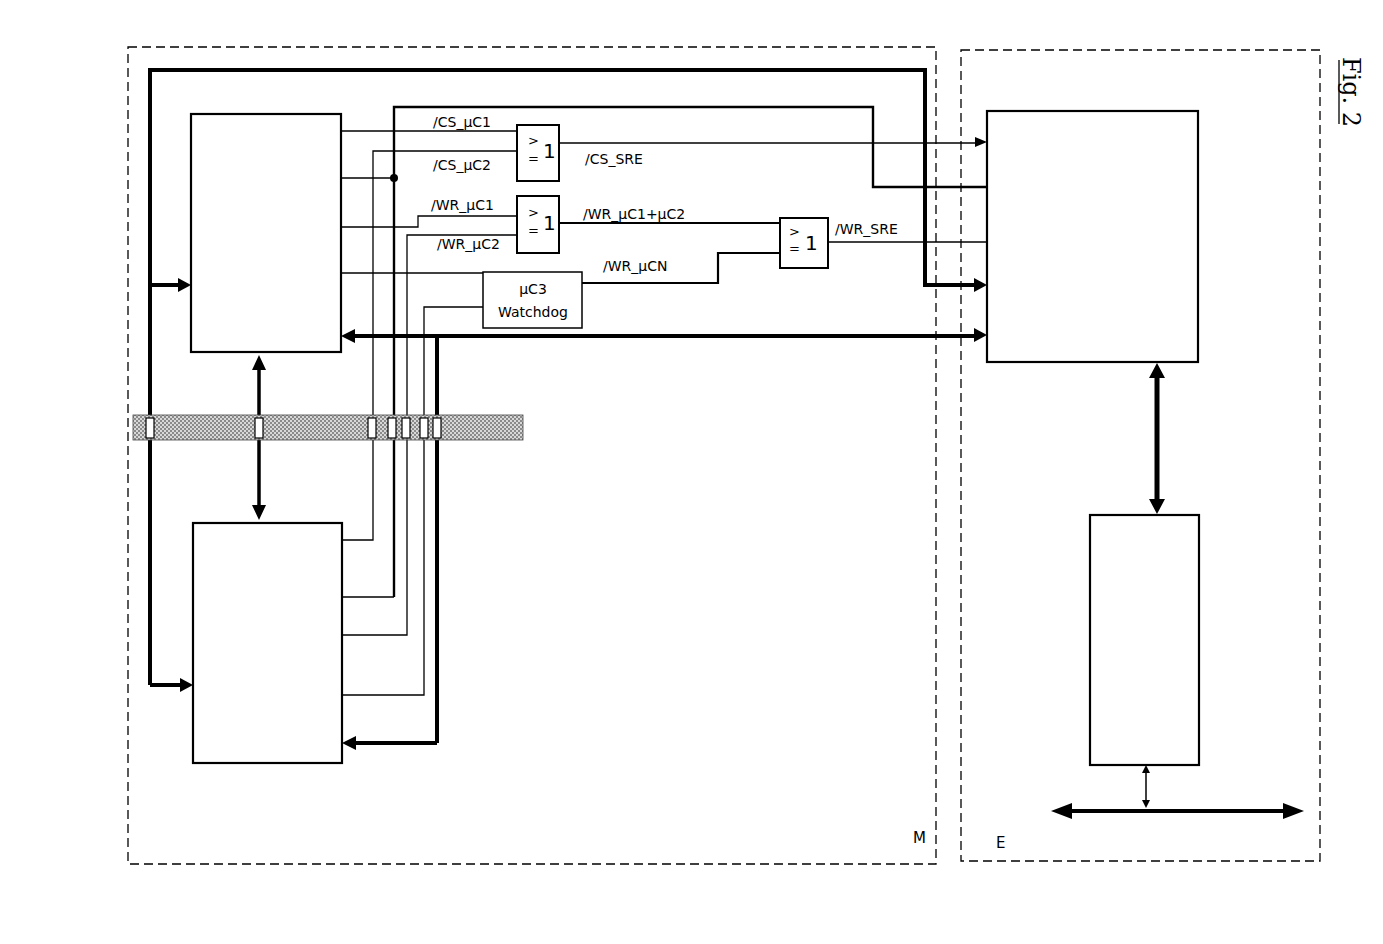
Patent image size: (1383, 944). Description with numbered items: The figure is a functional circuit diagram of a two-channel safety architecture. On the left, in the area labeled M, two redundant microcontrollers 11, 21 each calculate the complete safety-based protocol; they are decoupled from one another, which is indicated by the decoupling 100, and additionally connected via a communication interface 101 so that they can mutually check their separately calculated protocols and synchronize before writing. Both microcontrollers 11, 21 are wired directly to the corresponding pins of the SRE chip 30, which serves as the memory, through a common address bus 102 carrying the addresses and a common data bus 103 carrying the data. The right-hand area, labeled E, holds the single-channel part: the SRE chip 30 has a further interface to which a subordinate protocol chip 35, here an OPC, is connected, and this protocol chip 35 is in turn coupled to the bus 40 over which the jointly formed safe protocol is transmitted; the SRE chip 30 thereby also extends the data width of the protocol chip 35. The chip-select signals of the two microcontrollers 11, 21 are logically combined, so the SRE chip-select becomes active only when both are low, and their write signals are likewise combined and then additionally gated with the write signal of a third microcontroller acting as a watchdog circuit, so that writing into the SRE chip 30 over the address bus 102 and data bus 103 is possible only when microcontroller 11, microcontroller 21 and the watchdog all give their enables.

The microcontroller 11 is at (249, 122).
The microcontroller 21 is at (225, 730).
The SRE chip 30 is at (1118, 135).
The protocol chip 35 is at (1102, 548).
The bus 40 is at (1232, 808).
The decoupling 100 is at (487, 428).
The communication interface 101 is at (263, 457).
The address bus 102 is at (812, 338).
The data bus 103 is at (520, 66).